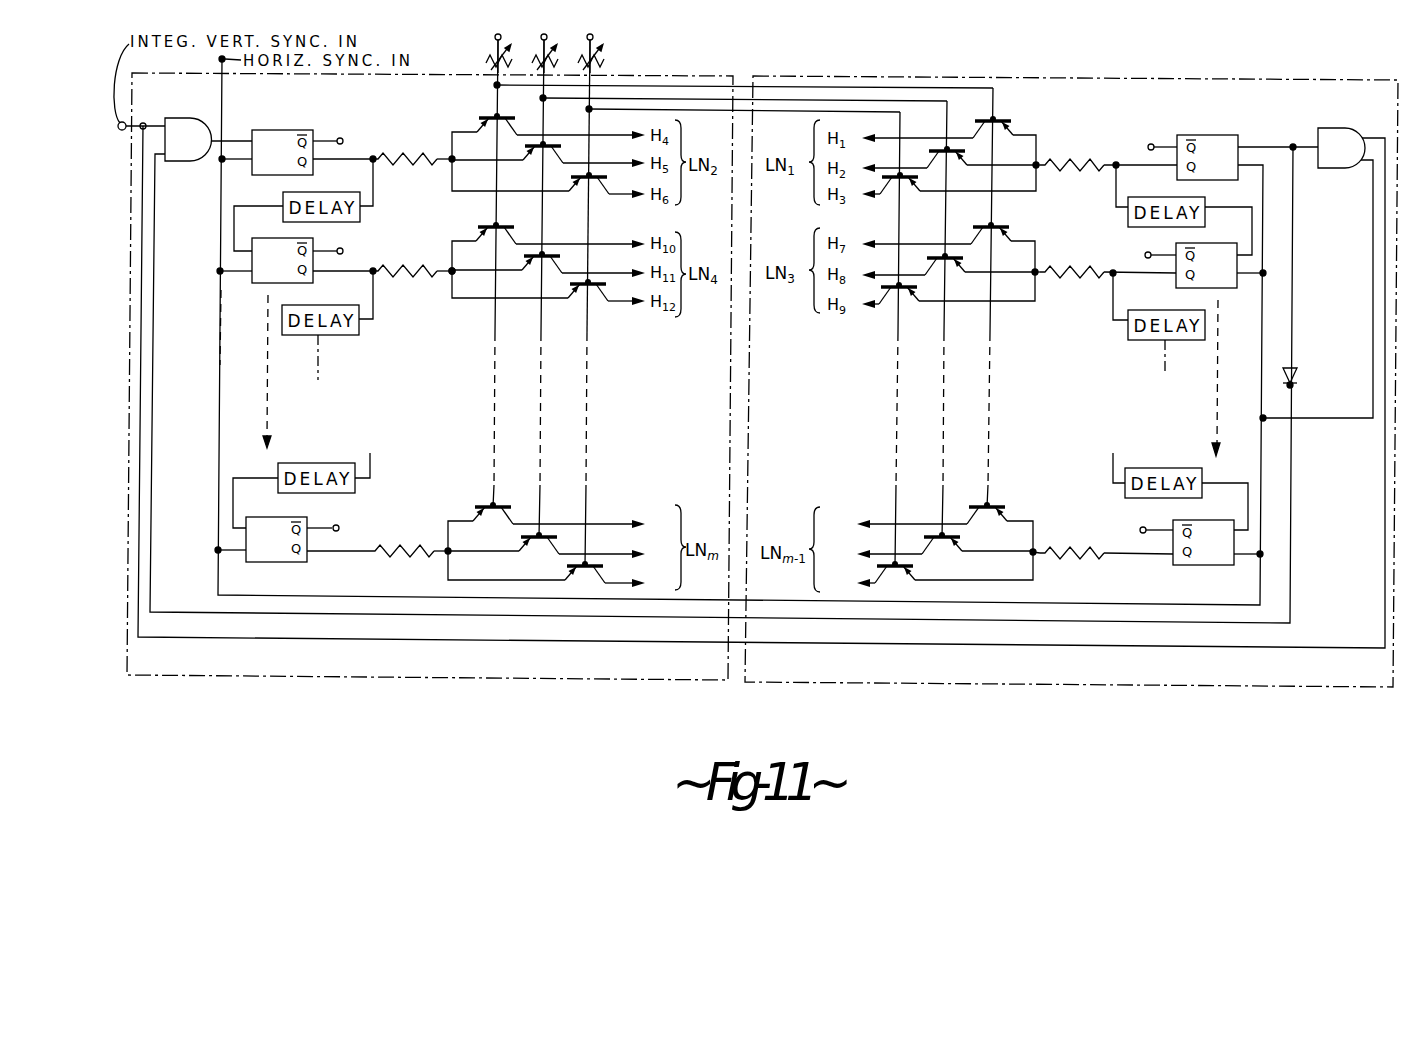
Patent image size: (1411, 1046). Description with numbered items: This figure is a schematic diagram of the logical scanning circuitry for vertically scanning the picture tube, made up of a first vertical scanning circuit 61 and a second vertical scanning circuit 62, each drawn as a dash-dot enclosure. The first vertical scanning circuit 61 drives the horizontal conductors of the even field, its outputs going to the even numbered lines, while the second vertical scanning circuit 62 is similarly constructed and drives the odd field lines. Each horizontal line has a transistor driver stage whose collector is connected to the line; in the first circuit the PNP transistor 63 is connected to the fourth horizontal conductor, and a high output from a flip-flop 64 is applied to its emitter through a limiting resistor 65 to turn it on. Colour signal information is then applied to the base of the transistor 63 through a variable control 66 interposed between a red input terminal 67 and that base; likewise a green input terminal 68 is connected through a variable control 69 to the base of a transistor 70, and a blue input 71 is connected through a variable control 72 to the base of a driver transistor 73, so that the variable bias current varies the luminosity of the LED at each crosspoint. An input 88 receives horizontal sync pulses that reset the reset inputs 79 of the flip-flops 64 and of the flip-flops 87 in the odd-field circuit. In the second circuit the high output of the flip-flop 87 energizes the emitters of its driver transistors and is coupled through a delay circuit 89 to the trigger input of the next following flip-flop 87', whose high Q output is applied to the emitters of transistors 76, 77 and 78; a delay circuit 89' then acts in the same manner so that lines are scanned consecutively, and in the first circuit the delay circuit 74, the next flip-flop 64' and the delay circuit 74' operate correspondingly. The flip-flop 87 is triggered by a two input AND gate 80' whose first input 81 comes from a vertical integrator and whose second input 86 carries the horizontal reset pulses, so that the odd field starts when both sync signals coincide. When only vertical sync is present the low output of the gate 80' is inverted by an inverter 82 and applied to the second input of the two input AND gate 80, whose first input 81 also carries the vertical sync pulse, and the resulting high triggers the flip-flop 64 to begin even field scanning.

The first vertical scanning circuit 61 is at (411, 685).
The second vertical scanning circuit 62 is at (1112, 690).
The transistor 63 is at (488, 117).
The flip-flop 64 is at (297, 134).
The flip-flop 64' is at (280, 279).
The limiting resistor 65 is at (411, 158).
The variable control 66 is at (486, 61).
The red input terminal 67 is at (494, 38).
The green input terminal 68 is at (604, 36).
The variable control 69 is at (538, 63).
The transistor 70 is at (545, 144).
The blue input 71 is at (672, 62).
The variable control 72 is at (603, 62).
The driver transistor 73 is at (592, 174).
The delay circuit 74 is at (320, 205).
The delay circuit 74' is at (345, 325).
The transistor 76 is at (1001, 226).
The transistor 77 is at (946, 255).
The transistor 78 is at (904, 287).
The reset input 79 is at (219, 168).
The two input AND gate 80 is at (208, 158).
The two input AND gate 80' is at (1343, 131).
The first input 81 is at (126, 122).
The inverter 82 is at (1294, 367).
The second input 86 is at (1372, 177).
The flip-flop 87 is at (1233, 137).
The flip-flop 87' is at (1179, 274).
The input 88 is at (219, 59).
The delay circuit 89 is at (1159, 216).
The delay circuit 89' is at (1146, 324).